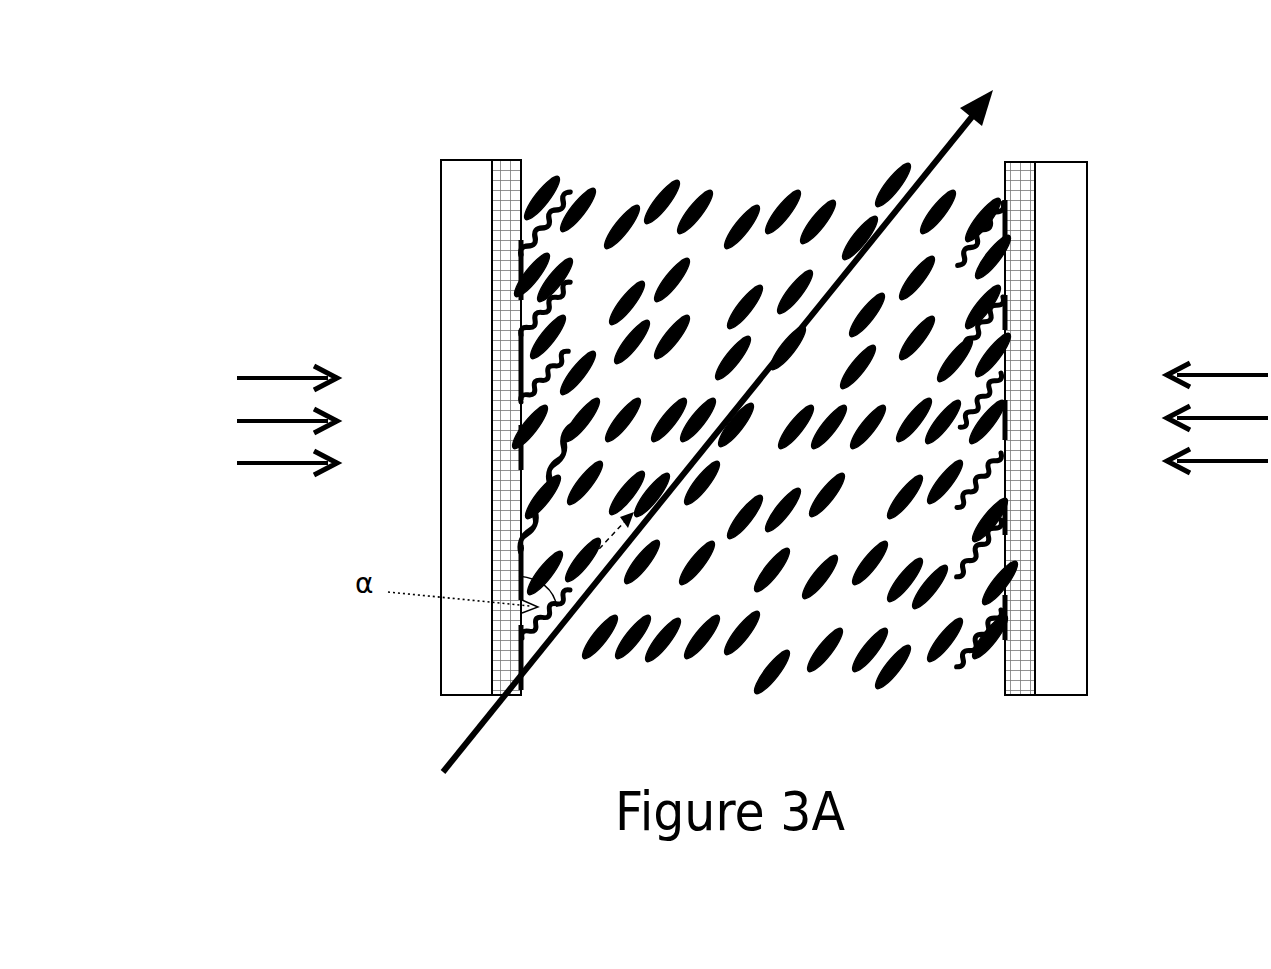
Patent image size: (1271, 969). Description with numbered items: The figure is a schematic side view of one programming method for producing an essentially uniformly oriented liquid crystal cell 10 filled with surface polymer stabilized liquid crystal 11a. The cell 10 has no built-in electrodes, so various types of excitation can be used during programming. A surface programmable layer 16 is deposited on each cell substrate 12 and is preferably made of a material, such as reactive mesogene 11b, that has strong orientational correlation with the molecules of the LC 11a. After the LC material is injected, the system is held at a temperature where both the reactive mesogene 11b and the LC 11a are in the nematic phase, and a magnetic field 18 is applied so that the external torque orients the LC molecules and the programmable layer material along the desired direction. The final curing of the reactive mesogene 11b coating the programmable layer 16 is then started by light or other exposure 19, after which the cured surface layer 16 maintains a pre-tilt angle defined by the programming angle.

The LC cell 10 is at (468, 122).
The cell substrate 12 is at (462, 276).
The surface programmable layer 16 is at (996, 158).
The liquid crystal 11a is at (770, 688).
The reactive mesogene 11b is at (960, 668).
The magnetic field 18 is at (794, 402).
The exposure 19 is at (1242, 331).